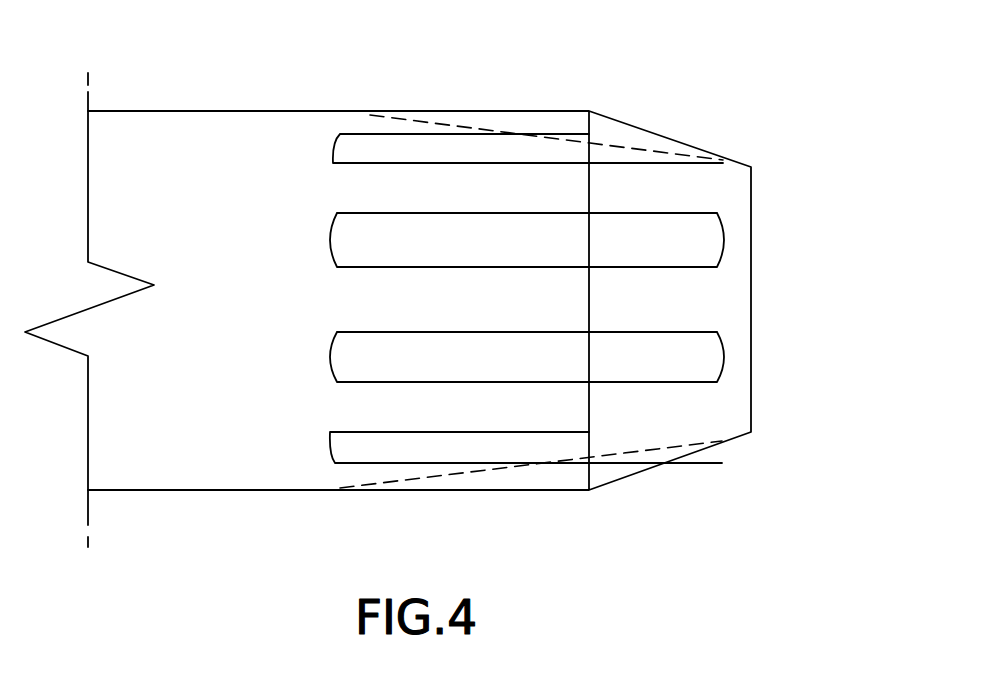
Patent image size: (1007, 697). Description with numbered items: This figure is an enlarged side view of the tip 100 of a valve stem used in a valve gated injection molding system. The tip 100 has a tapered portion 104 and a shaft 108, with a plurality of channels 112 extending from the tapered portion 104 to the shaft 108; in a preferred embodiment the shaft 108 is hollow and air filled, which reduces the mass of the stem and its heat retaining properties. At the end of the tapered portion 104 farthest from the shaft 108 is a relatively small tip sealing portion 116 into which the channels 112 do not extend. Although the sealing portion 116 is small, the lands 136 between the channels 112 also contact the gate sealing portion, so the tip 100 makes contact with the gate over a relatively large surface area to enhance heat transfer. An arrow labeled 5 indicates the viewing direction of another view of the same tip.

The tip of valve stem 100 is at (449, 75).
The tapered portion 104 is at (767, 475).
The shaft 108 is at (96, 513).
The channels 112 is at (395, 152).
The tip sealing portion 116 is at (758, 165).
The lands 136 is at (679, 204).
The view direction of FIG. 5 is at (847, 280).